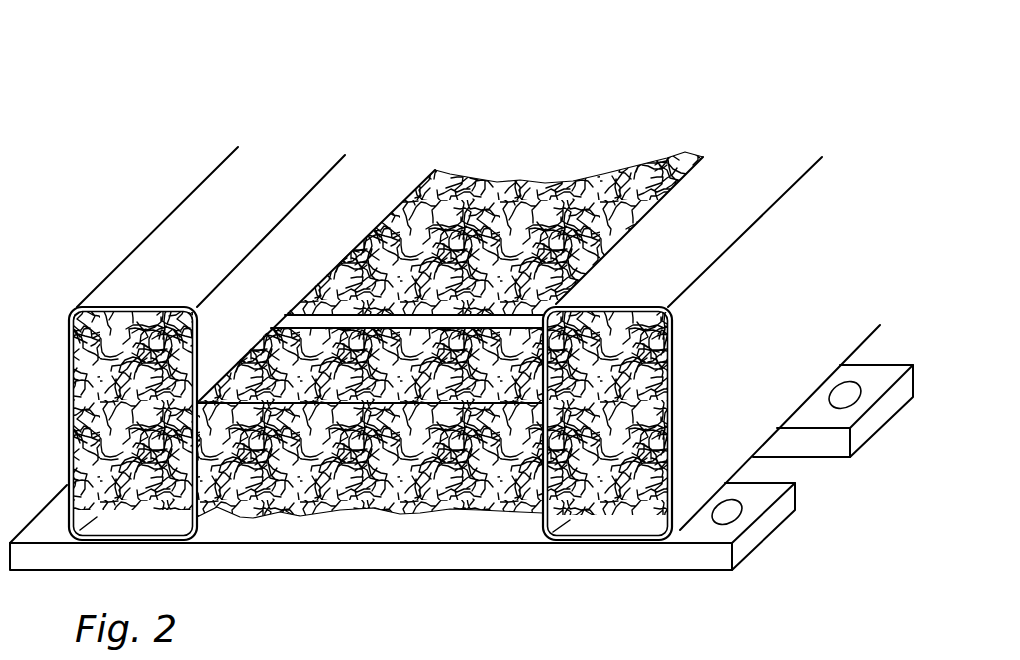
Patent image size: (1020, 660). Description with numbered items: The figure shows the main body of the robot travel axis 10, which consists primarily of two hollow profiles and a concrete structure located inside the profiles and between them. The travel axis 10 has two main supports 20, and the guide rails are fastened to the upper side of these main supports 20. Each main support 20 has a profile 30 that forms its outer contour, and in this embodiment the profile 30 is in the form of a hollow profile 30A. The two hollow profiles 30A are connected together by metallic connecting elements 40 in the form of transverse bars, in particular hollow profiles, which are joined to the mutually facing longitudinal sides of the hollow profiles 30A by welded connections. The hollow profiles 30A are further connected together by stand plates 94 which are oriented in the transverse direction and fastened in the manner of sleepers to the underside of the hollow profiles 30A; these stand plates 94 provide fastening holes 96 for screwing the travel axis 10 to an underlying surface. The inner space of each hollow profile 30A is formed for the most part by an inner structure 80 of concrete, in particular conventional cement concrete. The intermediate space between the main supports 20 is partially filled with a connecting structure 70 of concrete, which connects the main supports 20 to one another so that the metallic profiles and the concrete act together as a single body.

The robot travel axis 10 is at (197, 128).
The main support 20 is at (175, 202).
The profile 30 is at (695, 185).
The hollow profile 30A is at (293, 150).
The connecting element 40 is at (462, 323).
The connecting structure 70 is at (257, 352).
The inner structure 80 is at (80, 363).
The stand plate 94 is at (750, 548).
The fastening hole 96 is at (733, 512).